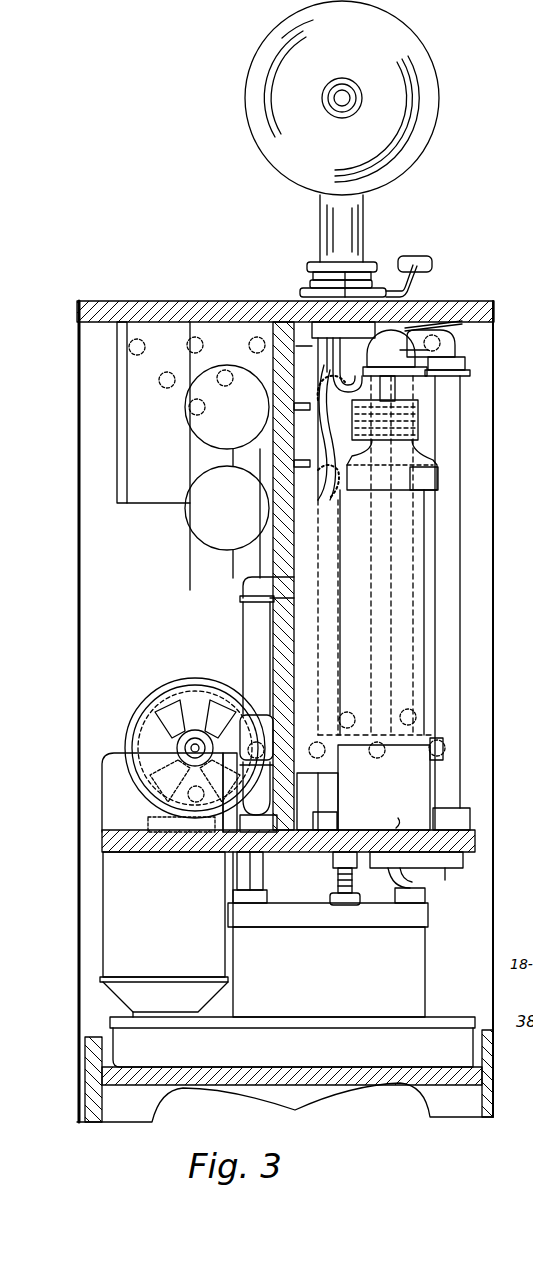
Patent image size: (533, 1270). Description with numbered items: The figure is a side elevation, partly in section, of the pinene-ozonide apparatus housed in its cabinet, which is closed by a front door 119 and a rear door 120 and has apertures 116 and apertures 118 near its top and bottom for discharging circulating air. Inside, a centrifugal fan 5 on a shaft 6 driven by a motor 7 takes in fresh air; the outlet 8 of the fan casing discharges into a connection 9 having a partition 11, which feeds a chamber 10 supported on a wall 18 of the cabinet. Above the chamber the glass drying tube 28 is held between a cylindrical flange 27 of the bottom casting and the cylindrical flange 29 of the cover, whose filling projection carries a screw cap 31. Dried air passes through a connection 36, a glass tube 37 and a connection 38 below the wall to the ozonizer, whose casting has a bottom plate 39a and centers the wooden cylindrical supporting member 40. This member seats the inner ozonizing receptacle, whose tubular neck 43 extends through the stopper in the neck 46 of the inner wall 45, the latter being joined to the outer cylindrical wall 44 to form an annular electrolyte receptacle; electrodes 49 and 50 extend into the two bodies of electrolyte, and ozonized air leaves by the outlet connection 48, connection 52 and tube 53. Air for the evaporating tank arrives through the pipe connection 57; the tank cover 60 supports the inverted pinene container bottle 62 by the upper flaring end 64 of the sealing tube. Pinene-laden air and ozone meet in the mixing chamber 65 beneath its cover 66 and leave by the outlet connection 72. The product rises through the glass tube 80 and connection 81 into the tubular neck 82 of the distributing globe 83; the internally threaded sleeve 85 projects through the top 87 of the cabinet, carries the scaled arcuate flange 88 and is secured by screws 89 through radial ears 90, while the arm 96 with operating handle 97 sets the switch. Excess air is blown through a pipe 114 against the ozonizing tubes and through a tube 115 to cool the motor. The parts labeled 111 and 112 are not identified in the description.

The centrifugal fan 5 is at (150, 702).
The shaft 6 is at (226, 690).
The motor 7 is at (196, 690).
The outlet 8 is at (250, 793).
The connection 9 is at (319, 801).
The chamber 10 is at (318, 786).
The partition 11 is at (227, 407).
The coil 111 is at (227, 508).
The wall 18 is at (292, 853).
The cylindrical flange 27 is at (437, 732).
The tube 28 is at (437, 637).
The cylindrical flange 29 is at (425, 472).
The screw cap 31 is at (319, 421).
The connection 36 is at (458, 335).
The glass tube 37 is at (452, 562).
The connection 38 is at (440, 870).
The bottom plate 39a is at (384, 818).
The cylindrical supporting member 40 is at (384, 786).
The tubular neck 43 is at (396, 390).
The outer cylindrical wall 44 is at (376, 536).
The inner wall 45 is at (392, 465).
The neck 46 is at (400, 416).
The outlet connection 48 is at (425, 392).
The electrode 49 is at (347, 365).
The electrode 50 is at (328, 432).
The connection 52 is at (391, 348).
The tube 53 is at (425, 405).
The pipe connection 57 is at (256, 883).
The cover 60 is at (305, 1017).
The pinene container bottle 62 is at (166, 917).
The upper flaring end 64 is at (165, 999).
The mixing chamber 65 is at (329, 972).
The cover 66 is at (328, 915).
The outlet connection 72 is at (345, 906).
The glass tube 80 is at (337, 545).
The connection 81 is at (362, 264).
The tubular neck 82 is at (365, 222).
The distributing globe 83 is at (342, 98).
The internally threaded sleeve 85 is at (314, 283).
The top 87 is at (182, 283).
The arcuate flange 88 is at (305, 291).
The screws 89 is at (350, 290).
The radial ears 90 is at (335, 334).
The arm 96 is at (425, 270).
The operating handle 97 is at (427, 259).
The elbow 112 is at (272, 611).
The pipe 114 is at (246, 641).
The tube 115 is at (222, 747).
The apertures 116 is at (456, 347).
The apertures 118 is at (252, 345).
The front door 119 is at (79, 455).
The rear door 120 is at (494, 486).